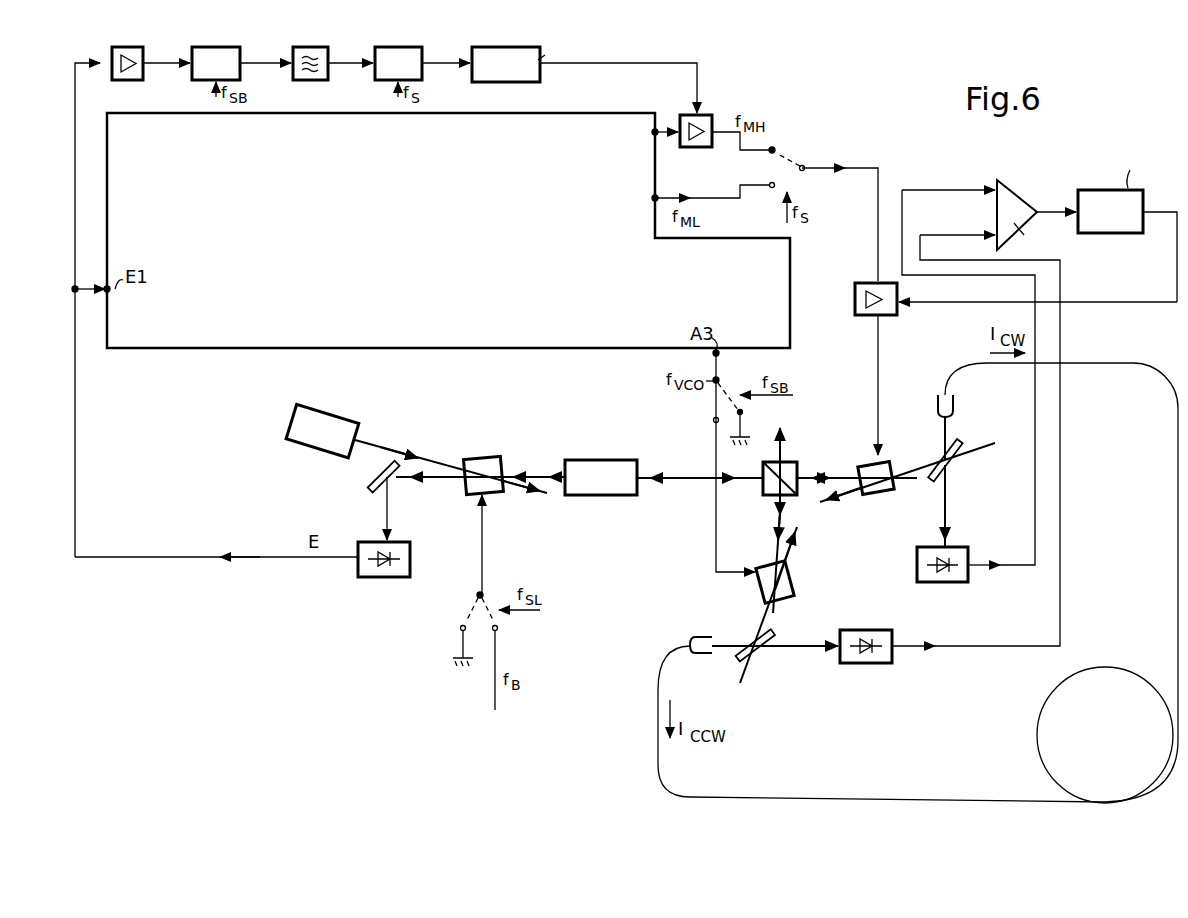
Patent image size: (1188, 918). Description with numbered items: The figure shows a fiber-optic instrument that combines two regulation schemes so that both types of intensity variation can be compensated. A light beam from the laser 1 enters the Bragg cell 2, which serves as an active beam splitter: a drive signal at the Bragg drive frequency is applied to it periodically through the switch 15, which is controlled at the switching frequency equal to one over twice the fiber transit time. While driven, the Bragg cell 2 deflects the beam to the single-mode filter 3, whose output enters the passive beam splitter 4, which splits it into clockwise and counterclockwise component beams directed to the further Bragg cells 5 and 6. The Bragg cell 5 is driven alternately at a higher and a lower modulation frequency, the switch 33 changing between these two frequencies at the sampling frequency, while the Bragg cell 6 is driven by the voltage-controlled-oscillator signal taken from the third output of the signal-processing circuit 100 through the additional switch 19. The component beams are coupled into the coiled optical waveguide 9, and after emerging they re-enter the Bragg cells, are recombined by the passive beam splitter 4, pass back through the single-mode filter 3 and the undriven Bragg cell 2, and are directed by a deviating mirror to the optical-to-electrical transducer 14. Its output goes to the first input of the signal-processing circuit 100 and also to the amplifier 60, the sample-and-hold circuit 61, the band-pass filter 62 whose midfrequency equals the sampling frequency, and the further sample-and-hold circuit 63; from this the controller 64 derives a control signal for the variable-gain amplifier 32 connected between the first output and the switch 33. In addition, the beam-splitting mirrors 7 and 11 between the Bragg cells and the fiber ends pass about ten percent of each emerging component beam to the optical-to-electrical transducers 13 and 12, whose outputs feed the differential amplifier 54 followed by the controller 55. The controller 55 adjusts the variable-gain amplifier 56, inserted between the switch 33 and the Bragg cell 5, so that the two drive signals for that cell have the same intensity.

The laser 1 is at (317, 452).
The Bragg cell 2 is at (490, 460).
The single-mode filter 3 is at (606, 460).
The passive beam splitter 4 is at (793, 461).
The Bragg cell 5 is at (863, 462).
The Bragg cell 6 is at (798, 572).
The beam-splitting mirror 7 is at (965, 440).
The coiled optical waveguide 9 is at (1178, 446).
The beam-splitting mirror 11 is at (758, 652).
The optical-to-electrical transducer 12 is at (880, 665).
The optical-to-electrical transducer 13 is at (955, 584).
The optical-to-electrical transducer 14 is at (370, 579).
The switch 15 is at (462, 612).
The switch 19 is at (708, 412).
The variable-gain amplifier 32 is at (682, 112).
The switch 33 is at (766, 206).
The differential amplifier 54 is at (989, 215).
The controller 55 is at (1115, 235).
The variable-gain amplifier 56 is at (890, 317).
The amplifier 60 is at (128, 82).
The sample-and-hold circuit 61 is at (197, 82).
The band-pass filter 62 is at (302, 82).
The sample-and-hold circuit 63 is at (383, 82).
The controller 64 is at (490, 84).
The signal-processing circuit 100 is at (195, 350).